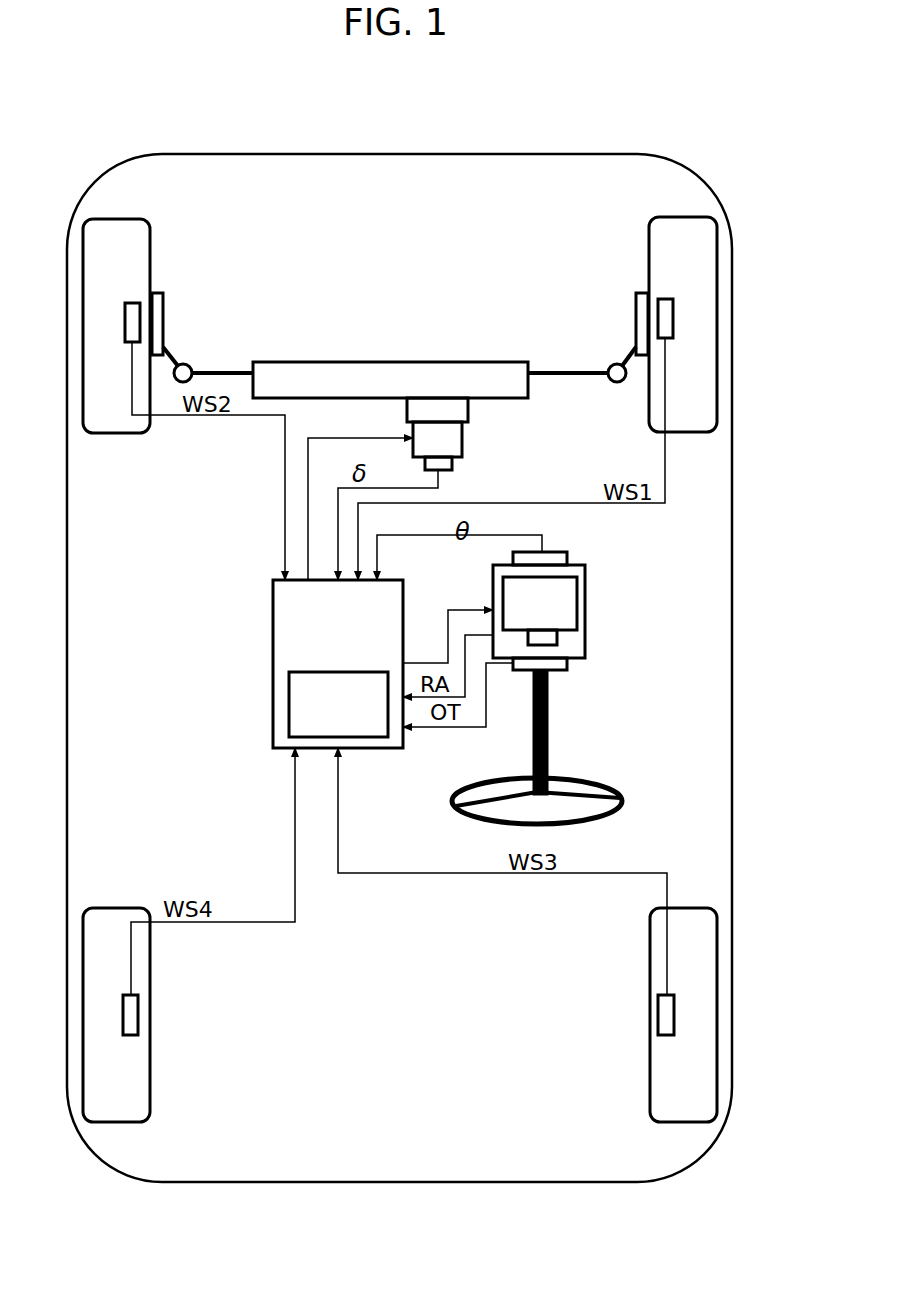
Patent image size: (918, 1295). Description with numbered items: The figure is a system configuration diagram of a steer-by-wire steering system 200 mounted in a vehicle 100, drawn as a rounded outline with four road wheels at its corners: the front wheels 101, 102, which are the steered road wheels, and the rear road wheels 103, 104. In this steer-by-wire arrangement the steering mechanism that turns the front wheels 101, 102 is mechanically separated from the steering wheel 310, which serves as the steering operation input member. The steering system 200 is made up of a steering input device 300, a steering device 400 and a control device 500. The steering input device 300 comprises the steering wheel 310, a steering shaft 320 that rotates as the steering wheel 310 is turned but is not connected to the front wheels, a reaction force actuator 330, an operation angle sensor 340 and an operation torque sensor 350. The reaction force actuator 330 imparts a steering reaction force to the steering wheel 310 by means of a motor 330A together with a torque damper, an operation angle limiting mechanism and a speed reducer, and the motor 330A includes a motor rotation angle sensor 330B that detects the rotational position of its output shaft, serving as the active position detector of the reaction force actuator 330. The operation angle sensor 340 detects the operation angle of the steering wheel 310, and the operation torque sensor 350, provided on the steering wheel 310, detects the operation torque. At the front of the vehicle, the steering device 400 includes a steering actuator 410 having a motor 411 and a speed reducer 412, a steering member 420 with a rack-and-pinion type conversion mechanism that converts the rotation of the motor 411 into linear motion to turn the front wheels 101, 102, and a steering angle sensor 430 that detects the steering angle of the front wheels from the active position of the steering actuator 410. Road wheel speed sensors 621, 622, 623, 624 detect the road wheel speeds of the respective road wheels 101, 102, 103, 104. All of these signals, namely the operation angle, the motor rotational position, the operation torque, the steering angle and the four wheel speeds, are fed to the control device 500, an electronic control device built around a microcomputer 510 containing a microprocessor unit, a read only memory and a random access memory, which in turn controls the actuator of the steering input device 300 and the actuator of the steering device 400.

The vehicle 100 is at (597, 153).
The front wheel 101 is at (700, 217).
The front wheel 102 is at (118, 218).
The road wheel 103 is at (650, 1091).
The road wheel 104 is at (143, 1088).
The steering system 200 is at (448, 918).
The steering input device 300 is at (546, 691).
The steering wheel 310 is at (583, 824).
The steering shaft 320 is at (548, 748).
The reaction force actuator 330 is at (596, 602).
The motor 330A is at (585, 580).
The motor rotation angle sensor 330B is at (557, 640).
The operation angle sensor 340 is at (567, 555).
The operation torque sensor 350 is at (566, 671).
The steering device 400 is at (400, 418).
The steering actuator 410 is at (460, 489).
The motor 411 is at (462, 437).
The speed reducer 412 is at (468, 405).
The steering member 420 is at (290, 362).
The steering angle sensor 430 is at (452, 462).
The control device 500 is at (393, 714).
The microcomputer 510 is at (355, 737).
The road wheel speed sensor 621 is at (660, 300).
The road wheel speed sensor 622 is at (137, 303).
The road wheel speed sensor 623 is at (658, 1018).
The road wheel speed sensor 624 is at (140, 1016).